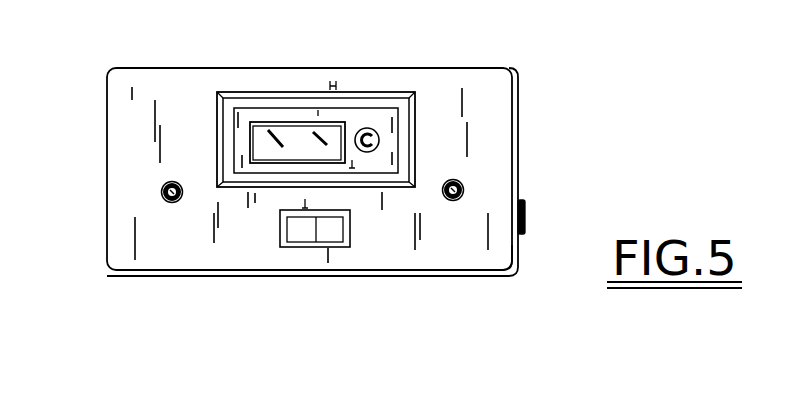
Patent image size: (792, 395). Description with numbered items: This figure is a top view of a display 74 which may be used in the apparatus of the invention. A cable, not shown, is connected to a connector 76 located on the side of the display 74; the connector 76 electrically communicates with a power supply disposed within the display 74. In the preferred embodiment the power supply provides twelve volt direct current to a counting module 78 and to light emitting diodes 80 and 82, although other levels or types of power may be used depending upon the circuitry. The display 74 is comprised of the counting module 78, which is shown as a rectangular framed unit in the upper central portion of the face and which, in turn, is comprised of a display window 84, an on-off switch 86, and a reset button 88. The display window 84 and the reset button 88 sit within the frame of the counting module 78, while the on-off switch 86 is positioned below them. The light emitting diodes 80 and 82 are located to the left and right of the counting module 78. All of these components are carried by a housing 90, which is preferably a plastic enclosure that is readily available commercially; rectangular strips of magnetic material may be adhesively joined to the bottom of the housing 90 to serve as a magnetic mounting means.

The display 74 is at (546, 119).
The connector 76 is at (526, 205).
The counting module 78 is at (219, 136).
The light emitting diode 80 is at (161, 192).
The light emitting diode 82 is at (465, 186).
The display window 84 is at (292, 128).
The on-off switch 86 is at (331, 231).
The reset button 88 is at (365, 128).
The housing 90 is at (502, 252).